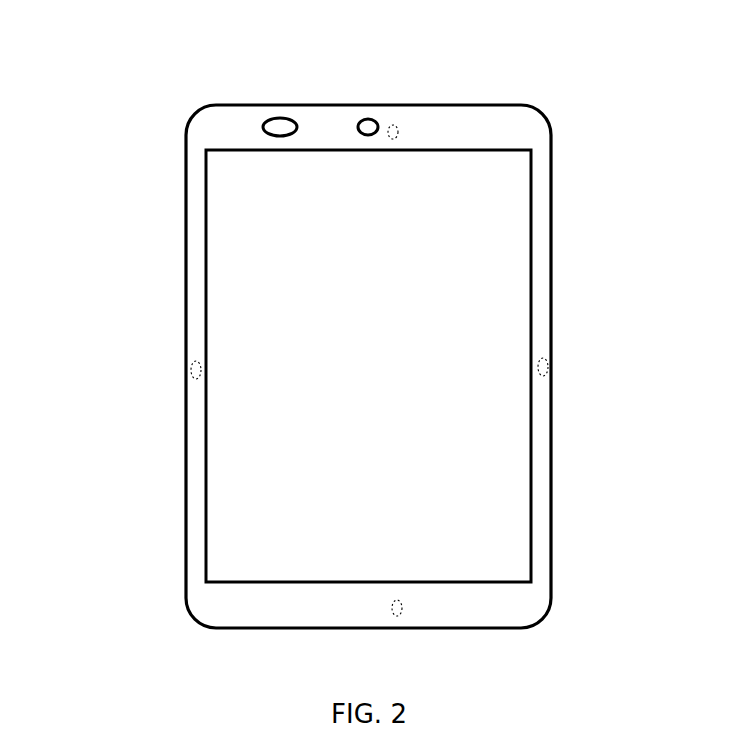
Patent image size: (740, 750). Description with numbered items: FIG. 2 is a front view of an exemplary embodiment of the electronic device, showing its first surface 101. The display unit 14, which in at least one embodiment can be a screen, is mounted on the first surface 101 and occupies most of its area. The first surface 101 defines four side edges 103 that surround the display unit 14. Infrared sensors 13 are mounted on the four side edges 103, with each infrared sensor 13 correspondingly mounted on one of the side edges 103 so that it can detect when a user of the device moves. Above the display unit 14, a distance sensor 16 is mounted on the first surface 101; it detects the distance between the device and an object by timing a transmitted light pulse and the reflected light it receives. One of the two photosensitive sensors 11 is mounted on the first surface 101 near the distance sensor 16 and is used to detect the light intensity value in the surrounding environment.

The first surface 101 is at (226, 131).
The display unit 14 is at (500, 240).
The photosensitive sensor 11 is at (280, 118).
The distance sensor 16 is at (368, 118).
The infrared sensor 13 is at (547, 358).
The side edges 103 is at (223, 612).